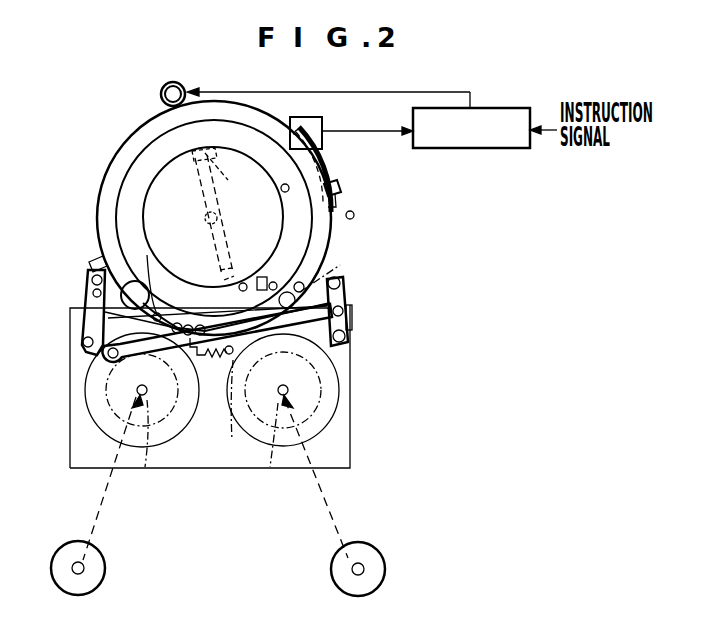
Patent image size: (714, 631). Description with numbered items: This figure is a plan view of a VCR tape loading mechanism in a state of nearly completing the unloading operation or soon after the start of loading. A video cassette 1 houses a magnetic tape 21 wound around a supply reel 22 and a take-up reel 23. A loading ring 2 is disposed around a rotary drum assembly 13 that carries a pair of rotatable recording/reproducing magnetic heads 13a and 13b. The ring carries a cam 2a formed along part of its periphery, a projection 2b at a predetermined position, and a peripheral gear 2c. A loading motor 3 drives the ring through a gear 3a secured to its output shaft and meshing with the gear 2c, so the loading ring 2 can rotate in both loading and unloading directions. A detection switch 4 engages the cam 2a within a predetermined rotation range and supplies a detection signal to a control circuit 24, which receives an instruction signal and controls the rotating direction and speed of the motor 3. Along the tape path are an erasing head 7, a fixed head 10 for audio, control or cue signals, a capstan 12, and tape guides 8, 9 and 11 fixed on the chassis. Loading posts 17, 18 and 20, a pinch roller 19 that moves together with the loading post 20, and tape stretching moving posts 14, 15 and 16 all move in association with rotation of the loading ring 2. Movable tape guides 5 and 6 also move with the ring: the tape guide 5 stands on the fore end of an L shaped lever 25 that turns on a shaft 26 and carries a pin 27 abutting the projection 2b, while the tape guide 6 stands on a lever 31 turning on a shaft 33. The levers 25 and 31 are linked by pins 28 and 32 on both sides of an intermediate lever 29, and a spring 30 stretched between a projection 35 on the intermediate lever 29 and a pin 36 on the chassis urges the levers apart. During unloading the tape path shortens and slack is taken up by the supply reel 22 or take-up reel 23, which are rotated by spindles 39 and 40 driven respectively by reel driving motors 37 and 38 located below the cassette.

The video cassette 1 is at (353, 378).
The loading ring 2 is at (132, 138).
The cam 2a is at (328, 160).
The projection 2b is at (95, 262).
The gear 2c is at (113, 162).
The loading motor 3 is at (163, 93).
The gear 3a is at (188, 90).
The detection switch 4 is at (313, 120).
The tape guide 5 is at (97, 276).
The tape guide 6 is at (347, 282).
The erasing head 7 is at (342, 183).
The tape guide 8 is at (281, 192).
The tape guide 9 is at (243, 283).
The fixed head 10 is at (262, 277).
The tape guide 11 is at (276, 282).
The capstan 12 is at (354, 214).
The rotary drum assembly 13 is at (232, 157).
The recording/reproducing magnetic head 13a is at (216, 162).
The recording/reproducing magnetic head 13b is at (213, 275).
The tape stretching moving post 14 is at (243, 342).
The tape stretching moving post 15 is at (190, 325).
The tape stretching moving post 16 is at (177, 323).
The loading post 17 is at (147, 256).
The loading post 18 is at (134, 281).
The pinch roller 19 is at (292, 342).
The loading post 20 is at (327, 275).
The magnetic tape 21 is at (340, 274).
The supply reel 22 is at (97, 418).
The take-up reel 23 is at (333, 428).
The control circuit 24 is at (502, 108).
The L shaped lever 25 is at (87, 302).
The shaft 26 is at (83, 342).
The pin 27 is at (92, 292).
The pin 28 is at (100, 356).
The intermediate lever 29 is at (135, 358).
The spring 30 is at (211, 360).
The lever 31 is at (348, 297).
The pin 32 is at (353, 320).
The shaft 33 is at (348, 342).
The projection 35 is at (166, 358).
The pin 36 is at (232, 440).
The reel driving motor 37 is at (70, 545).
The reel driving motor 38 is at (366, 546).
The reel drive member 39 is at (145, 467).
The reel drive member 40 is at (270, 467).